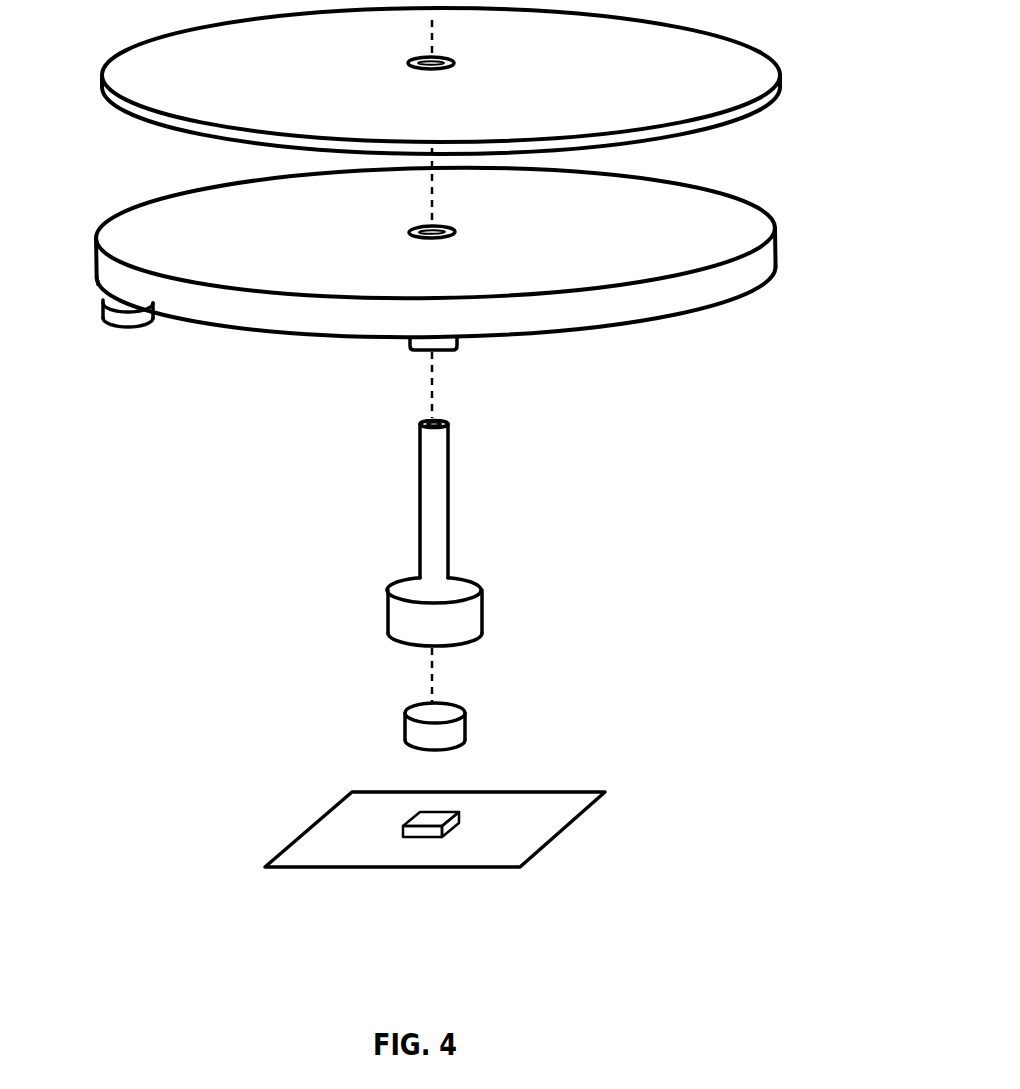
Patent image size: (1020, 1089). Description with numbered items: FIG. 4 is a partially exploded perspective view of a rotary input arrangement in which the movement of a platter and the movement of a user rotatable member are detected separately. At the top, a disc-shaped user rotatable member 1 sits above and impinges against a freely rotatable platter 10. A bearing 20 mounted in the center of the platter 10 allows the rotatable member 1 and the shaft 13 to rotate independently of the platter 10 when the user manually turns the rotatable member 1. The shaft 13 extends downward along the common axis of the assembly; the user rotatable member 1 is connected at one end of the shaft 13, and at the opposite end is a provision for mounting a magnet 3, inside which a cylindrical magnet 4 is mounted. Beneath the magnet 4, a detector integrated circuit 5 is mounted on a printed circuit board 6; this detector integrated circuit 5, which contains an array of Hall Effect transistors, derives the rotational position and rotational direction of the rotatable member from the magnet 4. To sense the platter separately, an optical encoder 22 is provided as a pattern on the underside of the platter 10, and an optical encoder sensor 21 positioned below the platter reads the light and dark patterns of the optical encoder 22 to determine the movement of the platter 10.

The user rotatable member 1 is at (757, 72).
The platter 10 is at (743, 230).
The shaft 13 is at (438, 528).
The bearing 20 is at (447, 342).
The optical encoder sensor 21 is at (140, 317).
The optical encoder 22 is at (98, 285).
The provision for mounting a magnet 3 is at (473, 615).
The cylindrical magnet 4 is at (463, 722).
The detector integrated circuit 5 is at (463, 818).
The printed circuit board 6 is at (588, 808).